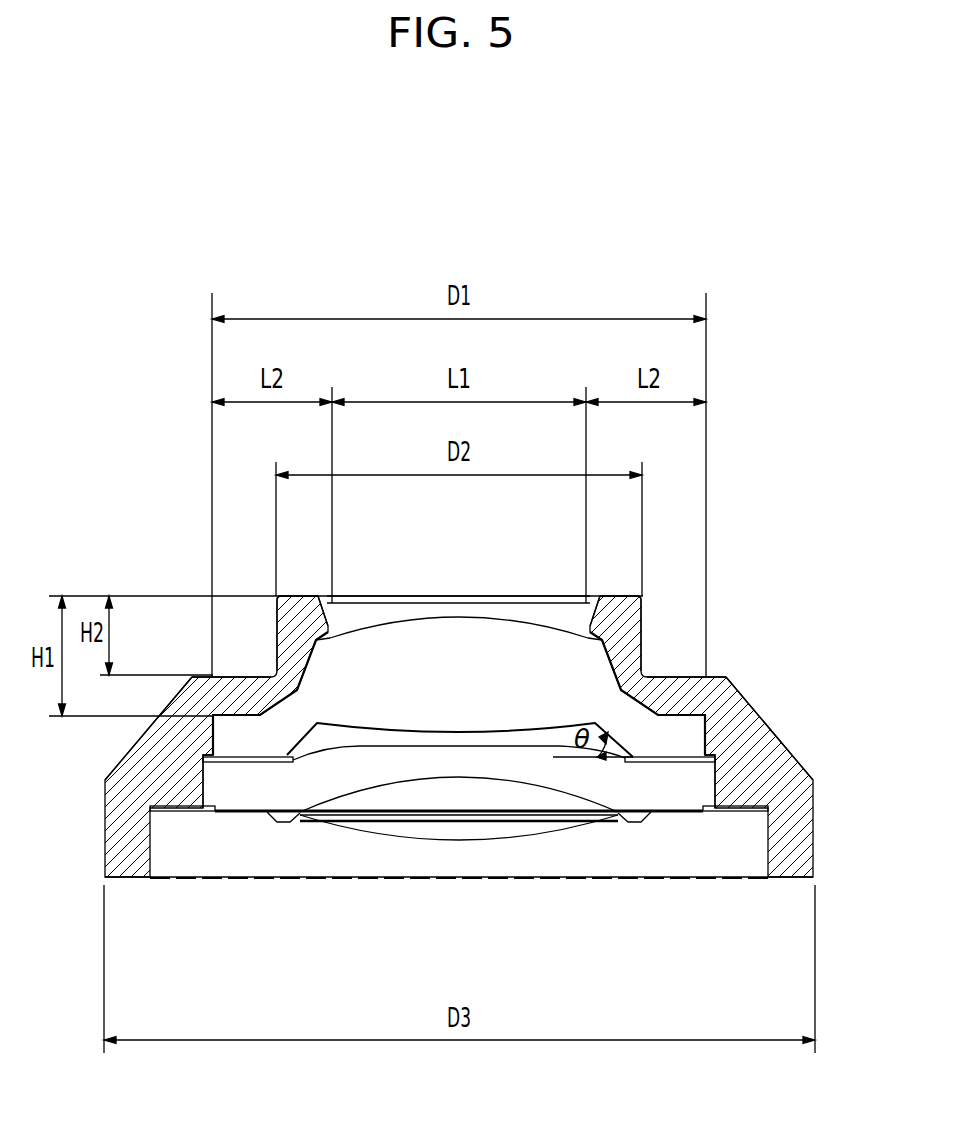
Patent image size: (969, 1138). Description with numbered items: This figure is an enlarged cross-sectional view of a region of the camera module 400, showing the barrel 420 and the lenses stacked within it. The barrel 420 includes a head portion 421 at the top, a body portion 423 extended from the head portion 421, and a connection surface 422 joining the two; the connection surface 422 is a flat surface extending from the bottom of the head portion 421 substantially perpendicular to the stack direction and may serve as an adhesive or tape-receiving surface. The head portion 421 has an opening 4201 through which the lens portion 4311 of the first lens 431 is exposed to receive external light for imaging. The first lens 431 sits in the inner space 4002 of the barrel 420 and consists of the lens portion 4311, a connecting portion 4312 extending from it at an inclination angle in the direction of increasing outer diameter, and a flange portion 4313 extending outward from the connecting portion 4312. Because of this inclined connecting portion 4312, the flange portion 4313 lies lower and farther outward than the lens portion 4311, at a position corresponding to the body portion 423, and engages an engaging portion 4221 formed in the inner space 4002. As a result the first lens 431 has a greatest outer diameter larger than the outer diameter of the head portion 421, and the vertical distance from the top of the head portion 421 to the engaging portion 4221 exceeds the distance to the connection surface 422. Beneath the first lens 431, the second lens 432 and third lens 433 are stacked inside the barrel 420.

The camera module 400 is at (811, 588).
The barrel 420 is at (749, 692).
The head portion 421 is at (620, 618).
The connection surface 422 is at (682, 673).
The body portion 423 is at (772, 765).
The opening 4201 is at (570, 619).
The first lens 431 is at (389, 699).
The lens portion 4311 is at (460, 637).
The connecting portion 4312 is at (298, 718).
The flange portion 4313 is at (240, 743).
The engaging portion 4221 is at (212, 743).
The inner space 4002 is at (320, 740).
The second lens 432 is at (458, 762).
The third lens 433 is at (552, 860).